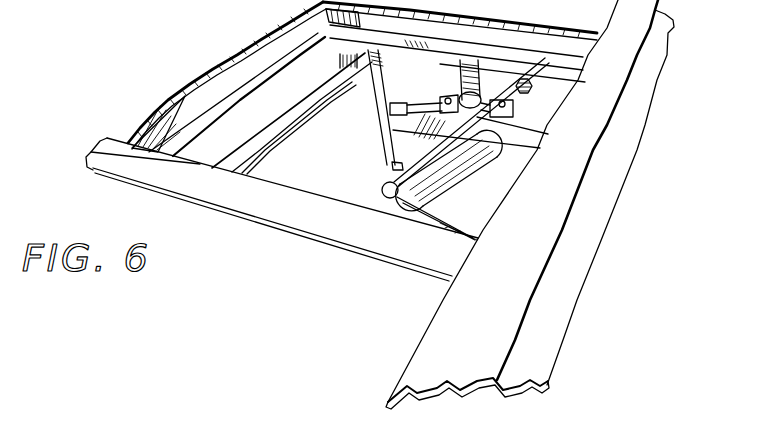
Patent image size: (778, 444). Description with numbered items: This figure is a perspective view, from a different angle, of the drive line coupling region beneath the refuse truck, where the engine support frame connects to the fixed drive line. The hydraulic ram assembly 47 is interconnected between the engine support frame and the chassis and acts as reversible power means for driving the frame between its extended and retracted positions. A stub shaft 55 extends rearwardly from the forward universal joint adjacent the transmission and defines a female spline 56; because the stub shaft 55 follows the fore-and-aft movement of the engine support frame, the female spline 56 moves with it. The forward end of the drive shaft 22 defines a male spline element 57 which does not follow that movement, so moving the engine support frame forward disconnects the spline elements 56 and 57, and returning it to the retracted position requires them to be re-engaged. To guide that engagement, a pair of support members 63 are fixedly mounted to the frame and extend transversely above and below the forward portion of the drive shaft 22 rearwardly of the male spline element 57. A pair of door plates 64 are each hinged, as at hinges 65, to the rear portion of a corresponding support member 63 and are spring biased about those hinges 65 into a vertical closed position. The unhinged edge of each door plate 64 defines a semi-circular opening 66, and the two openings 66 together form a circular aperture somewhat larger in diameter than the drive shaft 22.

The drive shaft 22 is at (503, 172).
The hydraulic ram assembly 47 is at (370, 206).
The stub shaft 55 is at (581, 37).
The female spline 56 is at (530, 93).
The male spline element 57 is at (515, 107).
The support members 63 is at (412, 101).
The door plates 64 is at (402, 143).
The hinges 65 is at (394, 110).
The semi-circular opening 66 is at (496, 152).